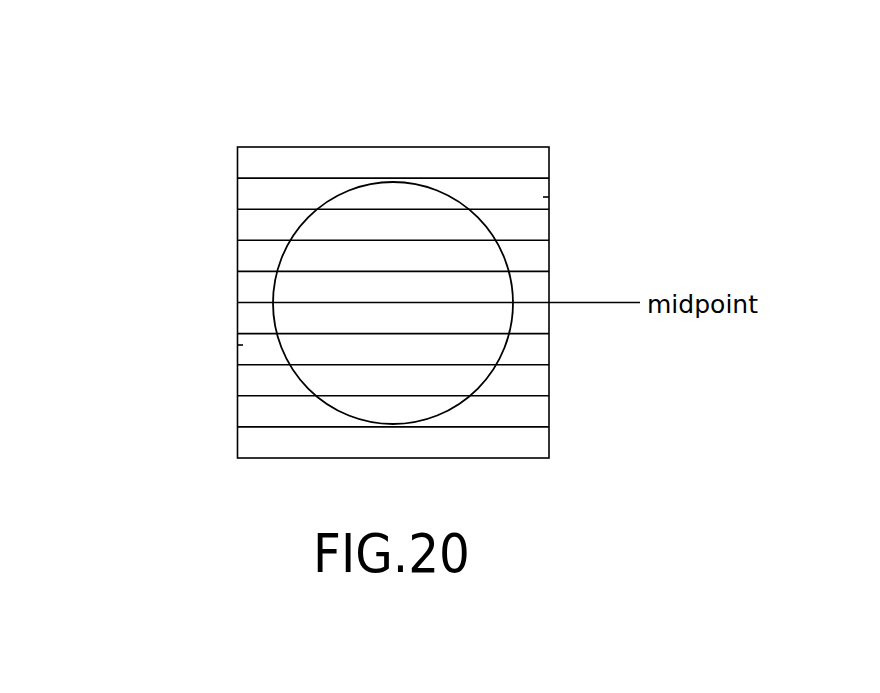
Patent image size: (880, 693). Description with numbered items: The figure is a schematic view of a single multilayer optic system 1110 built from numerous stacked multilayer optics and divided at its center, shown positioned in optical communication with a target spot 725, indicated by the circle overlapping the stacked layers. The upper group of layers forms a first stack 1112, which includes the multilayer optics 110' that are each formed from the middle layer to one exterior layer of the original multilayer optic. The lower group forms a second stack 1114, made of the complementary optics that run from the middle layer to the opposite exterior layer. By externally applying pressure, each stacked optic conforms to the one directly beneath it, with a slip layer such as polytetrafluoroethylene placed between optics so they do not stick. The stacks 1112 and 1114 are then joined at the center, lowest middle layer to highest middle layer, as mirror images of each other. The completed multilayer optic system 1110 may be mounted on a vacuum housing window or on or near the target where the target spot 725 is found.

The multilayer optic system 1110 is at (150, 162).
The first stack 1112 is at (223, 146).
The second stack 1114 is at (563, 305).
The target spot 725 is at (287, 290).
The multilayer optic 110' is at (614, 186).